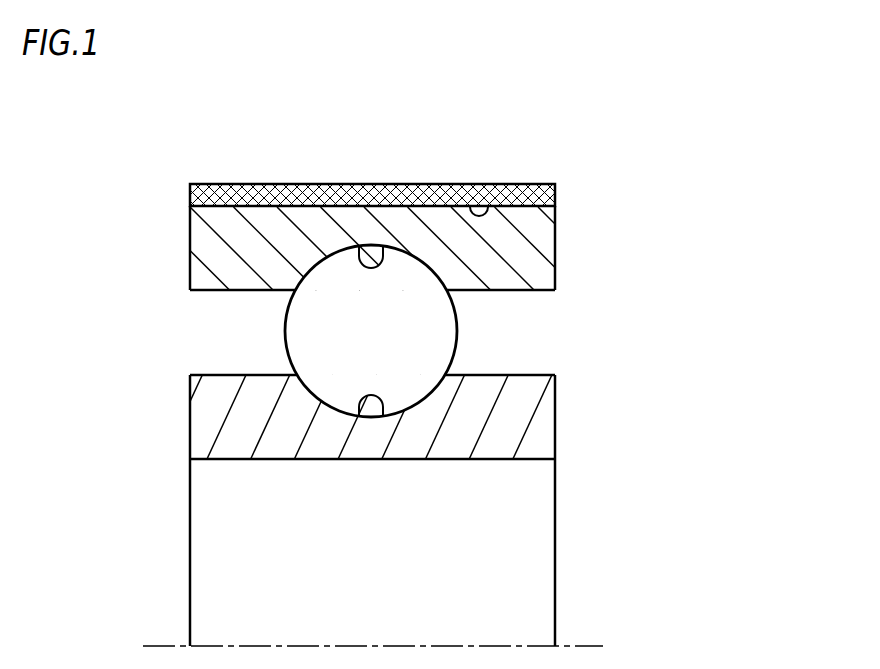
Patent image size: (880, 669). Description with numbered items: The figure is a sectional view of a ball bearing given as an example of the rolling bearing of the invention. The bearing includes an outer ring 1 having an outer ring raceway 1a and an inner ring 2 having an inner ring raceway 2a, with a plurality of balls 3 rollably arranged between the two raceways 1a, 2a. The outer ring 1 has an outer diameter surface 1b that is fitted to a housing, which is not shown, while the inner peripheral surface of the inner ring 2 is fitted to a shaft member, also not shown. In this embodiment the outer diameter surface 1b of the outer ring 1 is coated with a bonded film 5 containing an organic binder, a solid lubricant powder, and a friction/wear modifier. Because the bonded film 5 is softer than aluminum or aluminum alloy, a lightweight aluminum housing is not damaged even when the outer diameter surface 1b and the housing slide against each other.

The outer ring 1 is at (213, 251).
The outer ring raceway 1a is at (359, 246).
The outer diameter surface 1b is at (479, 206).
The inner ring 2 is at (216, 414).
The inner ring raceway 2a is at (367, 417).
The balls 3 is at (433, 333).
The bonded film 5 is at (268, 205).